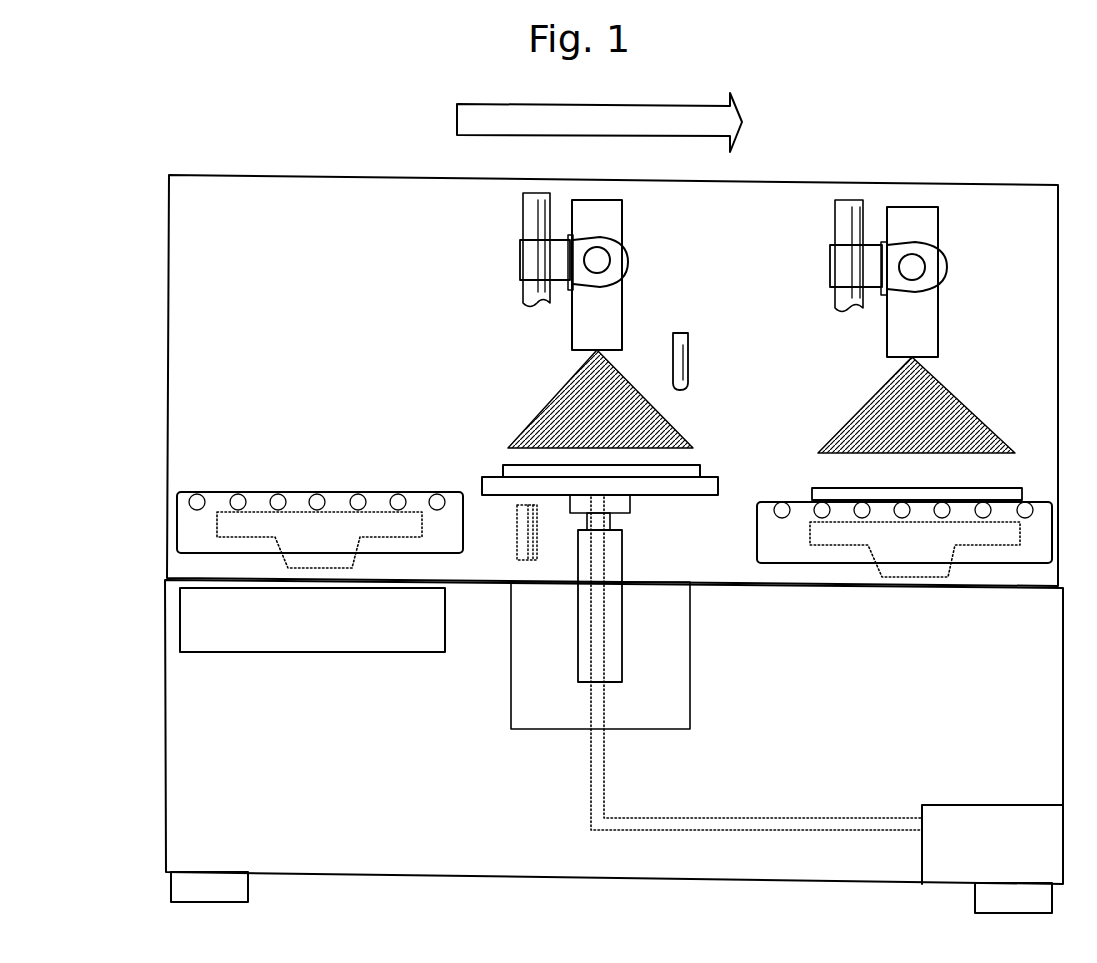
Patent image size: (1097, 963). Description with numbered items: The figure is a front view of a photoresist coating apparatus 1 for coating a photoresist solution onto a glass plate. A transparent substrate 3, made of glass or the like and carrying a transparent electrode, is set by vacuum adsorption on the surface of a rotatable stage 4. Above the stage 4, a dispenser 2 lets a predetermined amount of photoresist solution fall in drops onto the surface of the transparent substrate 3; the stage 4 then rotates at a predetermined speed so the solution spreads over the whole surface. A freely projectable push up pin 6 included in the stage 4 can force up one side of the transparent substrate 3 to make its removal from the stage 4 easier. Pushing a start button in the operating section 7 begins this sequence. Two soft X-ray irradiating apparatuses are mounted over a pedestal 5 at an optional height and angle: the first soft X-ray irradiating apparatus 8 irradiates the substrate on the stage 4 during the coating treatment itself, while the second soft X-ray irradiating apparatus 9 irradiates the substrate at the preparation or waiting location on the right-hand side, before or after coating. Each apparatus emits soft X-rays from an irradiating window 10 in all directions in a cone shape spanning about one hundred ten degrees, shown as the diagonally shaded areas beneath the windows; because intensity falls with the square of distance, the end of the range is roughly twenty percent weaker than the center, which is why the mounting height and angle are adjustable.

The photoresist coating apparatus 1 is at (988, 182).
The dispenser 2 is at (680, 345).
The transparent substrate 3 is at (700, 468).
The rotatable stage 4 is at (643, 488).
The pedestal 5 is at (902, 587).
The push up pin 6 is at (518, 552).
The operating section 7 is at (316, 635).
The first soft X-ray irradiating apparatus 8 is at (600, 215).
The second soft X-ray irradiating apparatus 9 is at (918, 228).
The irradiating window 10 is at (597, 348).